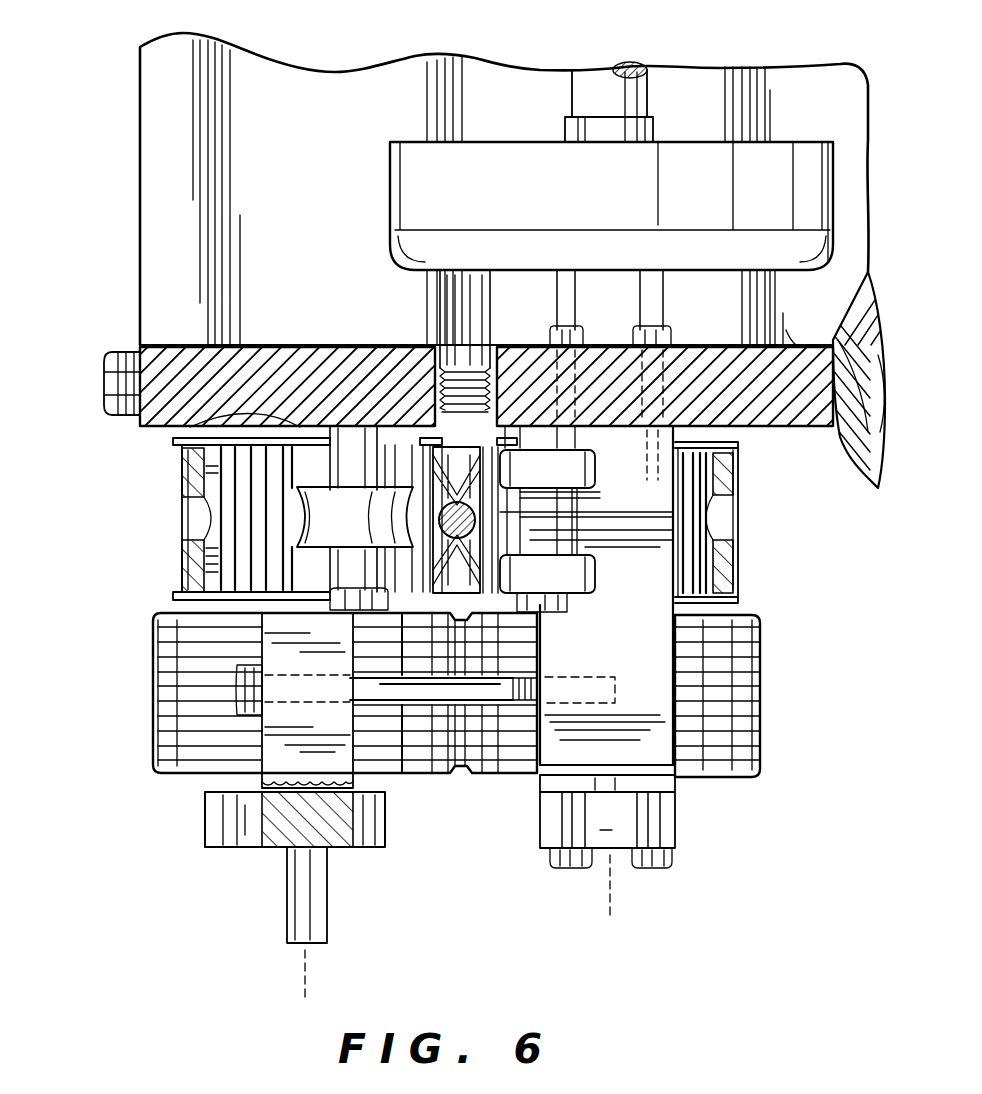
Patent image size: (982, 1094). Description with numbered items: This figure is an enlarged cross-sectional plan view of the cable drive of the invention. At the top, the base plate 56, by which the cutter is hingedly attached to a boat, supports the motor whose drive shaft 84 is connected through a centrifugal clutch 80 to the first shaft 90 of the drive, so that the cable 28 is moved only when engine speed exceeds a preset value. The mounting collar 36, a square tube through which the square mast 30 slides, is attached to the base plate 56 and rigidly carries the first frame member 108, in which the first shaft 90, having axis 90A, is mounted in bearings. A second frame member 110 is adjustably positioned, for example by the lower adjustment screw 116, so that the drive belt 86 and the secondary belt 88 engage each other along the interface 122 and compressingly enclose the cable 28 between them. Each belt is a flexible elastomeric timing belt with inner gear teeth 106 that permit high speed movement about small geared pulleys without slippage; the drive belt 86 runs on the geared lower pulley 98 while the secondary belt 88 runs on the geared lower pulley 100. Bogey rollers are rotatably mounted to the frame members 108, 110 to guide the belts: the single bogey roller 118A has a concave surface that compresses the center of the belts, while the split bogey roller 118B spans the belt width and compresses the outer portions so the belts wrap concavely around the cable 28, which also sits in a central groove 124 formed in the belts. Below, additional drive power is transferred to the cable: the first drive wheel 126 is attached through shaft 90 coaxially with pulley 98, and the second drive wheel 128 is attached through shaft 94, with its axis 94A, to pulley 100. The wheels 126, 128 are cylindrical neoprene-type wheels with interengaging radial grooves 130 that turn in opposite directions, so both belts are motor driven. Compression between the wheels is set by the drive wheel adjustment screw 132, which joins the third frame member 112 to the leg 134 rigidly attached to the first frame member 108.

The cable 28 is at (490, 504).
The mast 30 is at (853, 440).
The mounting collar 36 is at (860, 440).
The base plate 56 is at (294, 172).
The centrifugal clutch 80 is at (590, 203).
The drive shaft 84 is at (595, 80).
The drive belt 86 is at (722, 568).
The secondary belt 88 is at (335, 463).
The first shaft 90 is at (622, 297).
The axis of shaft 90 90A is at (613, 898).
The shaft 94 is at (200, 425).
The axis of shaft 94 94A is at (300, 980).
The geared lower pulley 98 is at (740, 602).
The geared lower pulley 100 is at (170, 597).
The gear teeth 106 is at (204, 578).
The first frame member 108 is at (800, 336).
The second frame member 110 is at (165, 358).
The third frame member 112 is at (375, 850).
The lower adjustment screw 116 is at (104, 386).
The single bogey roller 118A is at (315, 511).
The split bogey roller 118B is at (585, 570).
The interface 122 is at (483, 595).
The groove 124 is at (712, 506).
The first drive wheel 126 is at (757, 778).
The second drive wheel 128 is at (160, 777).
The radial grooves 130 is at (152, 708).
The drive wheel adjustment screw 132 is at (414, 693).
The leg 134 is at (567, 750).